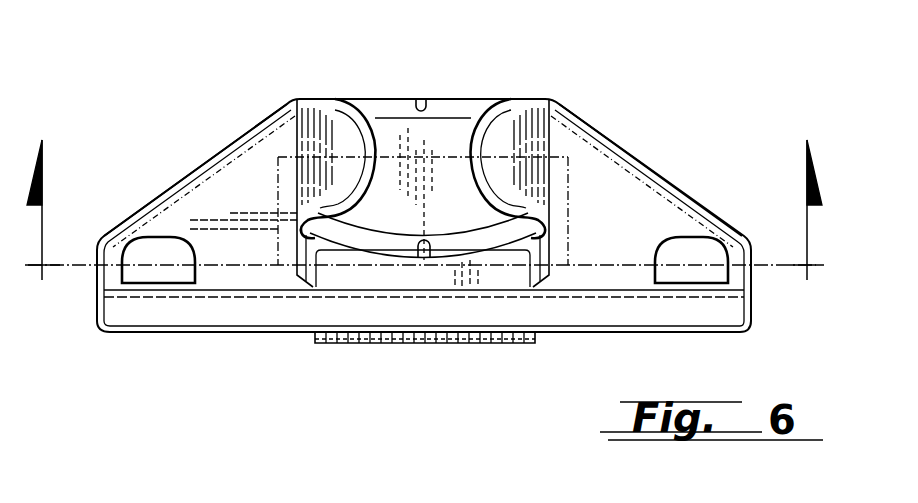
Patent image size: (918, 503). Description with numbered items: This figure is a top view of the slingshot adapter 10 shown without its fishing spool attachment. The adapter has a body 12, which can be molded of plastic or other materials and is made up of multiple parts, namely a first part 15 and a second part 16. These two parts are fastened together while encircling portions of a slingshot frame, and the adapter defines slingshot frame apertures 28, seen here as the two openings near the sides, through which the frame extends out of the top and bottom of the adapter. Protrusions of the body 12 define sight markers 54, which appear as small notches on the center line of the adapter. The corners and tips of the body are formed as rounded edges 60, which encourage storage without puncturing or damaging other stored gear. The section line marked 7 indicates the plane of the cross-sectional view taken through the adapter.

The slingshot adapter 10 is at (657, 87).
The body 12 is at (630, 232).
The first part 15 is at (197, 332).
The second part 16 is at (213, 153).
The slingshot frame apertures 28 is at (160, 247).
The sight markers 54 is at (421, 98).
The rounded edges 60 is at (393, 97).
The section line 7- 7 is at (424, 231).